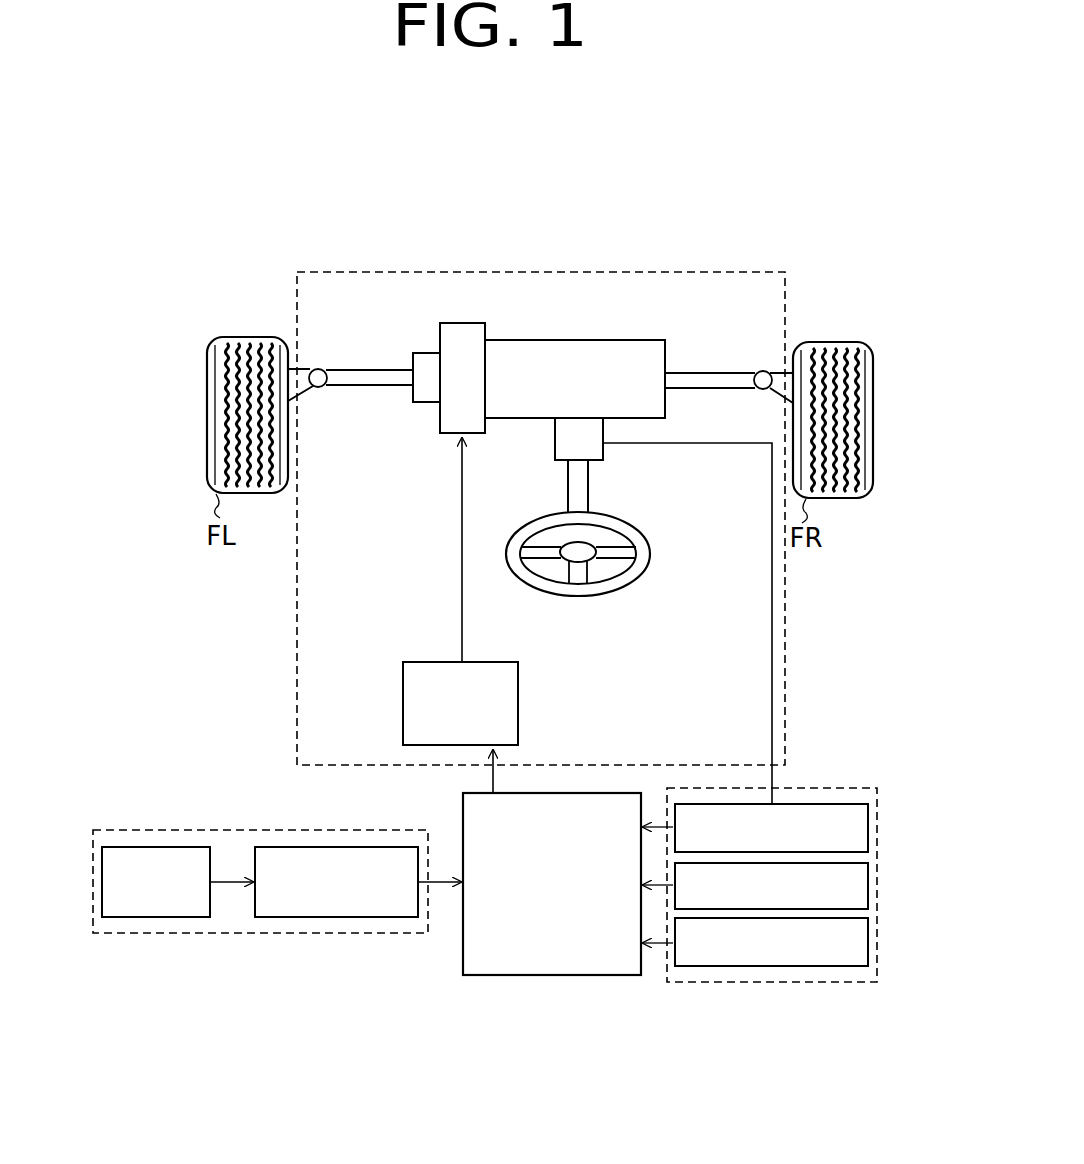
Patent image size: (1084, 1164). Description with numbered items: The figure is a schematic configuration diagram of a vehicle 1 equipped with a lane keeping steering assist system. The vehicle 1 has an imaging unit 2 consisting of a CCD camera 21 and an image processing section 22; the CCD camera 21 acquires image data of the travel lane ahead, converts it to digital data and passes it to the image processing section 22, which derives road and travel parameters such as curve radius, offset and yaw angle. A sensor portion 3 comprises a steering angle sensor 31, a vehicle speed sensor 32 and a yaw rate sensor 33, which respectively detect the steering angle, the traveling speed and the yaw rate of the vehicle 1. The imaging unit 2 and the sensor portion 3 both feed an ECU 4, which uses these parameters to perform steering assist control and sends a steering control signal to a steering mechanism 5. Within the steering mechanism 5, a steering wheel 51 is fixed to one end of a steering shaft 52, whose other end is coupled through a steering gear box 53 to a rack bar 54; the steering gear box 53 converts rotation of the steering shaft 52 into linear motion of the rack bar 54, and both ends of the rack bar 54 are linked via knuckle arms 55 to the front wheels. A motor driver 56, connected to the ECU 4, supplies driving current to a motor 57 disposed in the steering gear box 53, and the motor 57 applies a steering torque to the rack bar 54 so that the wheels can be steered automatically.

The vehicle 1 is at (795, 210).
The imaging unit 2 is at (130, 830).
The sensor portion 3 is at (833, 983).
The ECU 4 is at (548, 976).
The steering mechanism 5 is at (332, 270).
The CCD camera 21 is at (155, 847).
The image processing section 22 is at (362, 847).
The steering angle sensor 31 is at (869, 828).
The vehicle speed sensor 32 is at (869, 886).
The yaw rate sensor 33 is at (869, 944).
The steering wheel 51 is at (577, 596).
The steering shaft 52 is at (589, 485).
The steering gear box 53 is at (547, 340).
The rack bar 54 is at (368, 370).
The knuckle arm 55 is at (322, 368).
The motor driver 56 is at (519, 703).
The motor 57 is at (468, 322).